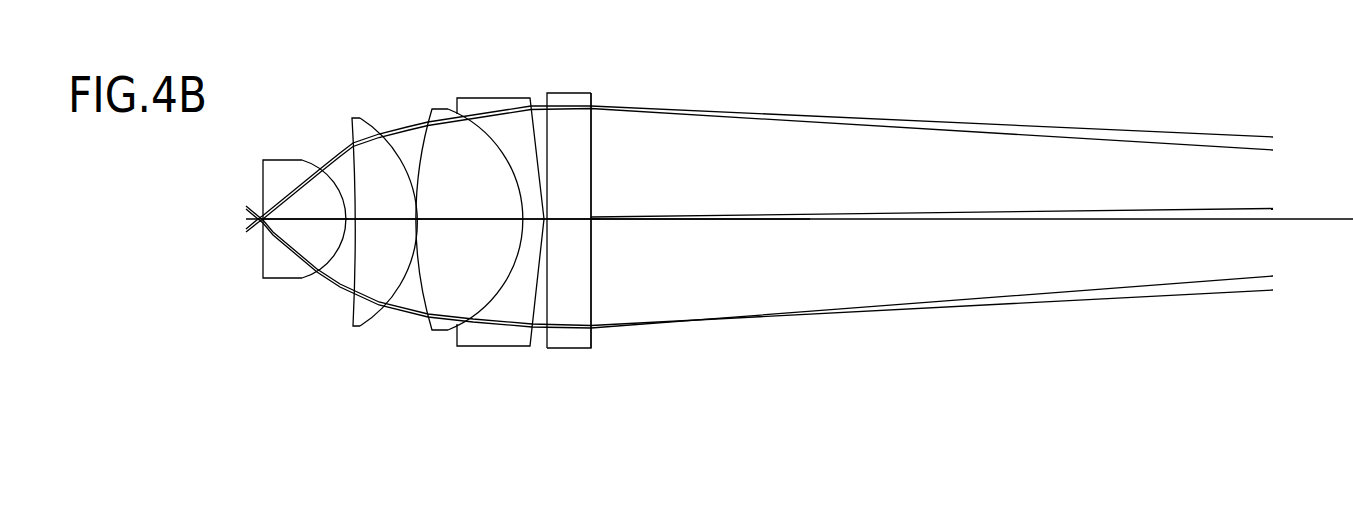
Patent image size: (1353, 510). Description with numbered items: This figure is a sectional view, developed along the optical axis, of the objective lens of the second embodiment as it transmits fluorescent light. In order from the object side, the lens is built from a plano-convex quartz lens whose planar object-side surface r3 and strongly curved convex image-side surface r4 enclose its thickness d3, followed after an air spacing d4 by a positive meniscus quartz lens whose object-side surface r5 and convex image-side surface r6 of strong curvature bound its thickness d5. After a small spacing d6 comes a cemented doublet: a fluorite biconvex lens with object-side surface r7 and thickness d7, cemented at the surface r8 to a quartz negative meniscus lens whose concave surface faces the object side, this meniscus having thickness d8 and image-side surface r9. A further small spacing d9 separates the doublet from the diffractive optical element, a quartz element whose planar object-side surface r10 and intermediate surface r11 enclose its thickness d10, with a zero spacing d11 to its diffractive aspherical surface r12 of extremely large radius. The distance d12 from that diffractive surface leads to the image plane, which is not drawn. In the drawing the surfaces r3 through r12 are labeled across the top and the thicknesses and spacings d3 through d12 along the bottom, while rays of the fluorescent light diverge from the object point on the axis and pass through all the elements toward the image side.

The object-side surface of plano-convex lens L1 r3 is at (276, 158).
The image-side surface of plano-convex lens L1 r4 is at (332, 180).
The object-side surface of positive meniscus lens L2 r5 is at (354, 178).
The image-side surface of positive meniscus lens L2 r6 is at (392, 148).
The object-side surface of biconvex lens L3' r7 is at (424, 145).
The cemented surface between L3' and L4' r8 is at (490, 138).
The image-side surface of negative meniscus lens L4' r9 is at (536, 127).
The object-side surface of diffractive optical element L5 r10 is at (547, 137).
The intermediate surface of diffractive optical element L5 r11 is at (591, 145).
The diffractive aspherical surface of diffractive optical element L5 r12 is at (591, 173).
The thickness of plano-convex lens L1 d3 is at (288, 222).
The spacing between lenses L1 and L2 d4 is at (347, 222).
The thickness of positive meniscus lens L2 d5 is at (383, 221).
The spacing between lens L2 and cemented doublet d6 is at (420, 221).
The thickness of biconvex lens L3' d7 is at (463, 222).
The thickness of negative meniscus lens L4' d8 is at (528, 222).
The spacing between cemented doublet and diffractive optical element d9 is at (543, 97).
The thickness of diffractive optical element L5 d10 is at (575, 222).
The spacing between surfaces r11 and r12 d11 is at (592, 222).
The distance from diffractive surface to image plane d12 is at (803, 222).